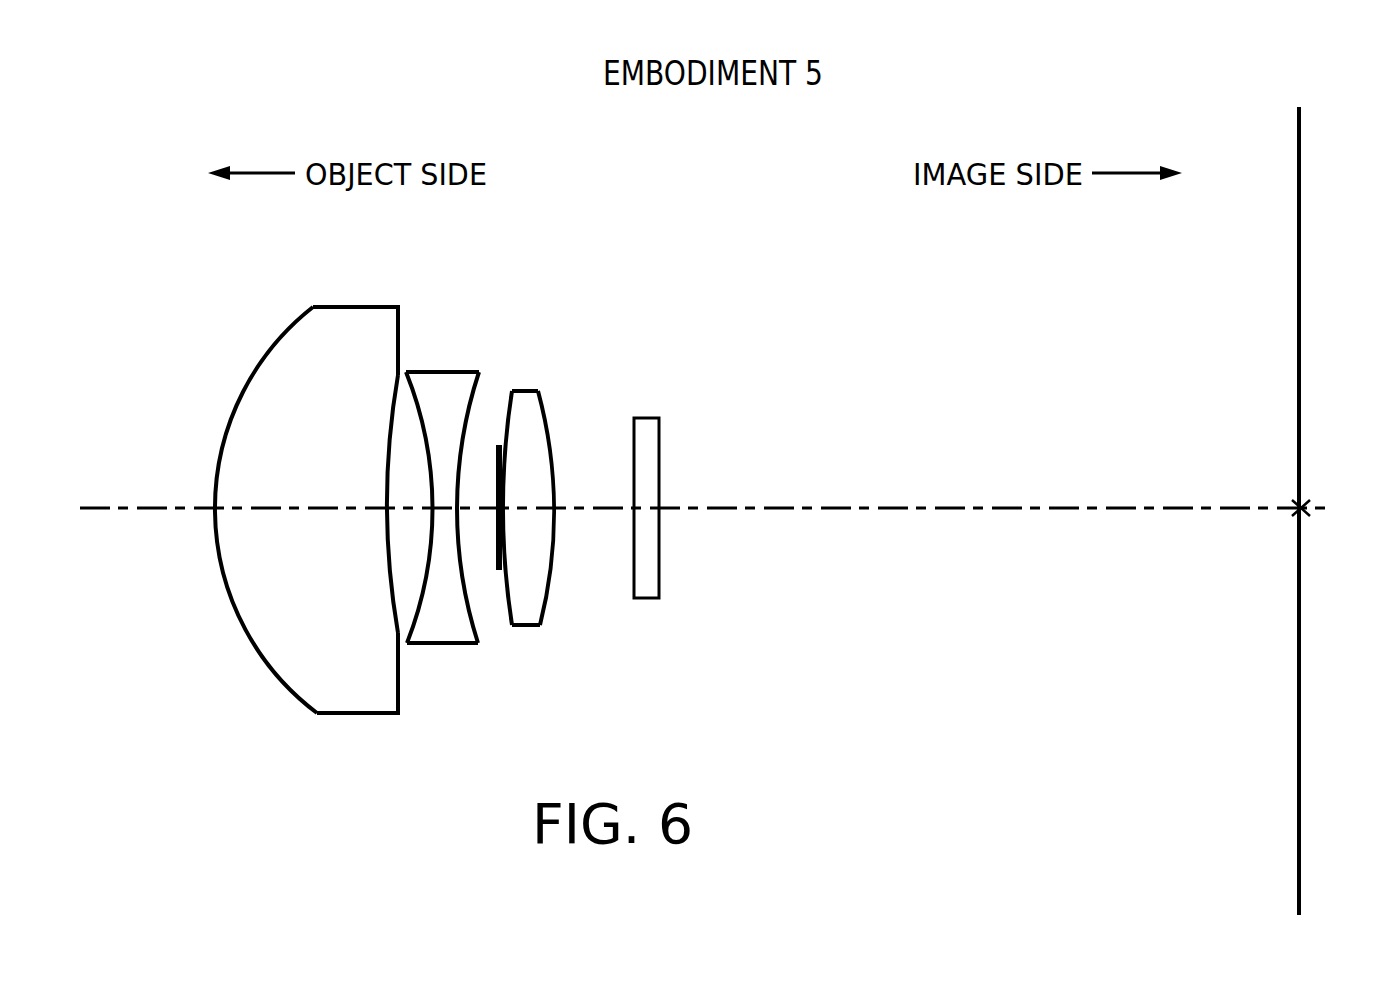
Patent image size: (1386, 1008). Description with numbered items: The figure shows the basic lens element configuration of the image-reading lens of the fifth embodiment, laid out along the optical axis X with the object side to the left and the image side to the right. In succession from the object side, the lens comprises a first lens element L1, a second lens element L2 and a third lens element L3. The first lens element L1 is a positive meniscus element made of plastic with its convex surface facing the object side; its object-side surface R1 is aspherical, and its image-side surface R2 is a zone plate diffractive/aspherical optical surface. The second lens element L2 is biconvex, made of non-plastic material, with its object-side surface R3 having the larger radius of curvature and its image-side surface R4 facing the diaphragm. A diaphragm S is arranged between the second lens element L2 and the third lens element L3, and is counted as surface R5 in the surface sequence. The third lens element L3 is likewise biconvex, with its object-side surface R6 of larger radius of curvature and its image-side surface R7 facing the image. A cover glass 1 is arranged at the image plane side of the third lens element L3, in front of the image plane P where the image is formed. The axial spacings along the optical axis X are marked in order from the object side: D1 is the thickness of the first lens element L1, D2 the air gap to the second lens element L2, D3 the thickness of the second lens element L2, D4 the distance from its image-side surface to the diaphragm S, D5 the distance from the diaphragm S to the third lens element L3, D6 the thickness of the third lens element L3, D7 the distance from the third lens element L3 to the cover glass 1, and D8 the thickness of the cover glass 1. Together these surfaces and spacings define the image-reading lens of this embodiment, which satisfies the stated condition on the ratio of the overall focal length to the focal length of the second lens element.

The radius of curvature of first surface R1 is at (248, 380).
The radius of curvature of second surface R2 is at (370, 504).
The radius of curvature of third surface R3 is at (423, 447).
The radius of curvature of fourth surface R4 is at (454, 507).
The radius of curvature of fifth surface R5 is at (493, 450).
The radius of curvature of sixth surface R6 is at (504, 408).
The radius of curvature of seventh surface R7 is at (574, 492).
The axial spacing of first surface D1 is at (290, 504).
The axial spacing of second surface D2 is at (414, 504).
The axial spacing of third surface D3 is at (422, 533).
The axial spacing of fourth surface D4 is at (452, 560).
The axial spacing of fifth surface D5 is at (505, 500).
The axial spacing of sixth surface D6 is at (532, 520).
The axial spacing of seventh surface D7 is at (601, 505).
The axial spacing of eighth surface D8 is at (662, 492).
The first lens element L1 is at (299, 556).
The second lens element L2 is at (419, 538).
The third lens element L3 is at (557, 522).
The diaphragm S is at (493, 497).
The optical axis X is at (187, 512).
The image plane P is at (1308, 511).
The cover glass 1 is at (645, 592).